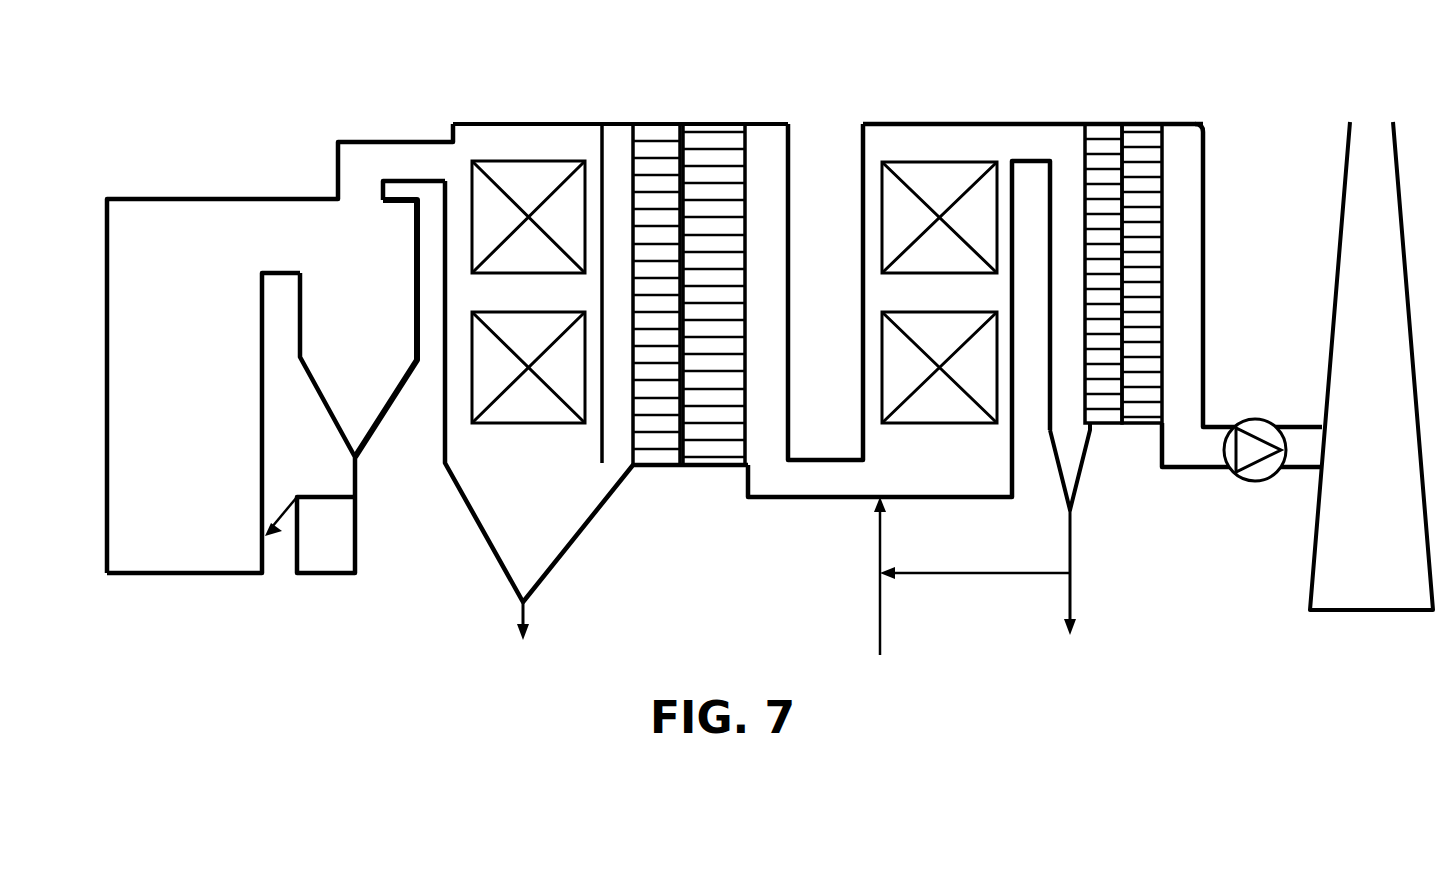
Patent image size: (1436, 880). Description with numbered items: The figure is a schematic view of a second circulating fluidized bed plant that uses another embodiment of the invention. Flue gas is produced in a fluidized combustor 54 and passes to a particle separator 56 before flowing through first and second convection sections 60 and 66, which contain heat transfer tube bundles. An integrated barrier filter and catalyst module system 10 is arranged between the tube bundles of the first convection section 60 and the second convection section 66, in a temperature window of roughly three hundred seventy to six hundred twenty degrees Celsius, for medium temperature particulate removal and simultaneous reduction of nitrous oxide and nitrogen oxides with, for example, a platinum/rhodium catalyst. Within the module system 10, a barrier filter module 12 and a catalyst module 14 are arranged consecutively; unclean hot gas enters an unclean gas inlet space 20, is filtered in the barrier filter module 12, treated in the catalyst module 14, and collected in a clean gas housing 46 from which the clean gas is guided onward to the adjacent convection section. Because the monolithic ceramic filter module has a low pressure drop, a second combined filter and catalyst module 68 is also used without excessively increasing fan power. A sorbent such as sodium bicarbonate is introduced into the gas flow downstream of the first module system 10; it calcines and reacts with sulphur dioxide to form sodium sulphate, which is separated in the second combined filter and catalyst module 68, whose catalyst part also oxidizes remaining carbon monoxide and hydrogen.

The integrated barrier filter and catalyst module system 10 is at (636, 62).
The barrier filter module 12 is at (650, 127).
The catalyst module 14 is at (720, 127).
The unclean gas inlet space 20 is at (603, 155).
The clean gas housing 46 is at (783, 290).
The fluidized combustor 54 is at (200, 347).
The particle separator 56 is at (367, 347).
The first convection section 60 is at (485, 127).
The second convection section 66 is at (918, 134).
The second combined filter and catalyst module 68 is at (1138, 98).